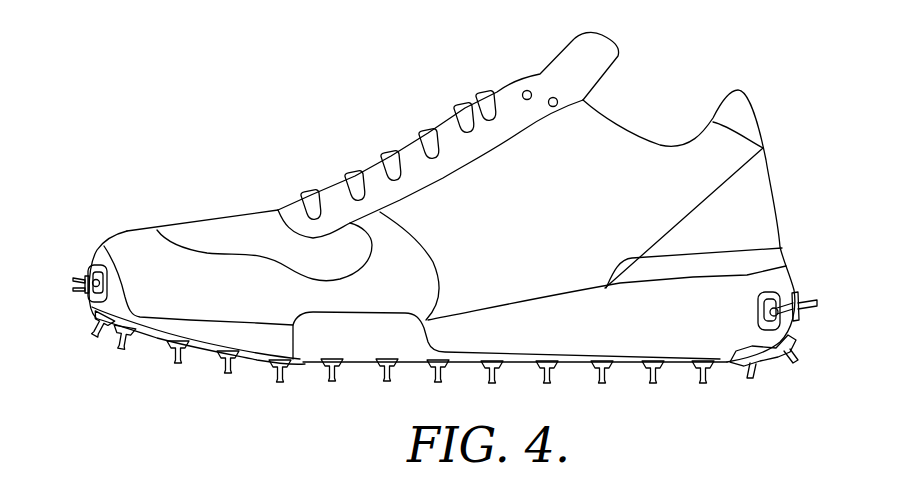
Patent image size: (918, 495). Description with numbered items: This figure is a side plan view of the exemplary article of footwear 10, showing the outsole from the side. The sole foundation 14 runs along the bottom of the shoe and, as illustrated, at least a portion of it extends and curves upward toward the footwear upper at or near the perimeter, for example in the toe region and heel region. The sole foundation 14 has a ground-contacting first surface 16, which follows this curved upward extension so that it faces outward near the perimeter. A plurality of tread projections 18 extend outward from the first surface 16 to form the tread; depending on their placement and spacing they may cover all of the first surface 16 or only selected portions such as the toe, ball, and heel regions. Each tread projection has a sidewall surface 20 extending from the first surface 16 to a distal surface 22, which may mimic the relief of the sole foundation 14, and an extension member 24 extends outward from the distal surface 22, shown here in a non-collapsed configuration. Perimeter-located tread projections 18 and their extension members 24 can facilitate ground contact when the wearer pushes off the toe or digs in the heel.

The article of footwear 10 is at (324, 107).
The sole foundation 14 is at (108, 306).
The first surface 16 is at (402, 343).
The tread projections 18 is at (152, 363).
The sidewall surface 20 is at (758, 356).
The distal surface 22 is at (765, 324).
The extension member 24 is at (808, 302).